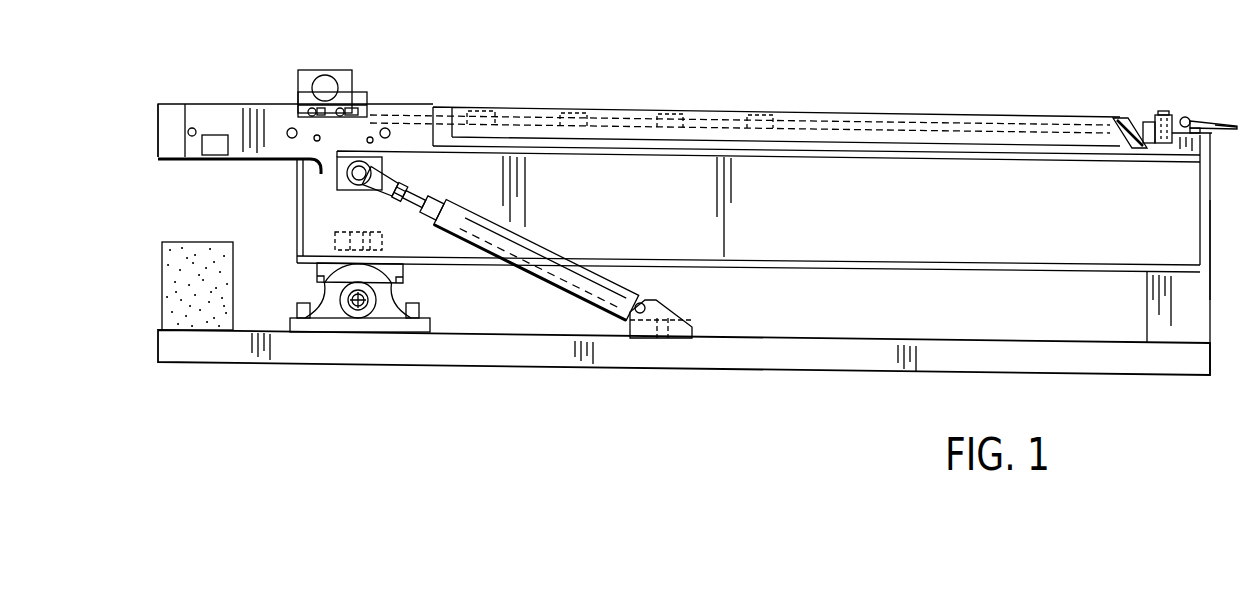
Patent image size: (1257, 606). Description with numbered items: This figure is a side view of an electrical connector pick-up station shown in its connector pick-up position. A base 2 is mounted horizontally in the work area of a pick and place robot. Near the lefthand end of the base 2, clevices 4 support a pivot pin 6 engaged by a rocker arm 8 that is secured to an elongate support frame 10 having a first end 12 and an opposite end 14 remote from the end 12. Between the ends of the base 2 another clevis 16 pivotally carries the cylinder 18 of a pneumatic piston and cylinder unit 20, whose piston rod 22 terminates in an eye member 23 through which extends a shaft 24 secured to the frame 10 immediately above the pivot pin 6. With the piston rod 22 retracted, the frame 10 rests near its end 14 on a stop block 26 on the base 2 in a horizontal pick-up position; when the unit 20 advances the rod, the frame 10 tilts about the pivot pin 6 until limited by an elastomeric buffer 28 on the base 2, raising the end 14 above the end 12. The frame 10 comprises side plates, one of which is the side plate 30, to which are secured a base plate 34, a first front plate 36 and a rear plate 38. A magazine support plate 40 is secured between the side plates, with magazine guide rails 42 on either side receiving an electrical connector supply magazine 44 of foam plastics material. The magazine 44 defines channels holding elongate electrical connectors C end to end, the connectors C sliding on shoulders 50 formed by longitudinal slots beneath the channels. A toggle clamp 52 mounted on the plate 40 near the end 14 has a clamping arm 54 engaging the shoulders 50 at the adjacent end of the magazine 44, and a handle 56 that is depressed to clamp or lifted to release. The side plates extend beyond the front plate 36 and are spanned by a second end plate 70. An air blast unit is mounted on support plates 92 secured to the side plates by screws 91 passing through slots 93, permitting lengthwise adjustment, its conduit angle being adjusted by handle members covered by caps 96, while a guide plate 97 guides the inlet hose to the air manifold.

The base 2 is at (852, 374).
The clevices 4 is at (386, 300).
The pivot pin 6 is at (358, 306).
The rocker arm 8 is at (383, 268).
The elongate support frame 10 is at (629, 100).
The first end 12 is at (157, 102).
The opposite end 14 is at (1213, 232).
The clevis 16 is at (695, 327).
The cylinder 18 is at (527, 262).
The pneumatic piston and cylinder unit 20 is at (556, 233).
The piston rod 22 is at (422, 194).
The eye member 23 is at (378, 196).
The shaft 24 is at (380, 163).
The stop block 26 is at (1167, 326).
The elastomeric buffer 28 is at (203, 242).
The side plate 30 is at (682, 204).
The base plate 34 is at (1005, 273).
The first front plate 36 is at (298, 220).
The rear plate 38 is at (1198, 241).
The magazine support plate 40 is at (1063, 163).
The magazine guide rails 42 is at (1072, 116).
The electrical connector supply magazine 44 is at (1133, 144).
The shoulders 50 is at (1148, 148).
The toggle clamp 52 is at (1184, 108).
The clamping arm 54 is at (1150, 116).
The handle 56 is at (1225, 129).
The second end plate 70 is at (176, 105).
The screws 91 is at (318, 72).
The support plates 92 is at (360, 90).
The slots 93 is at (368, 95).
The caps 96 is at (330, 74).
The guide plate 97 is at (233, 169).
The electrical connectors C is at (757, 113).